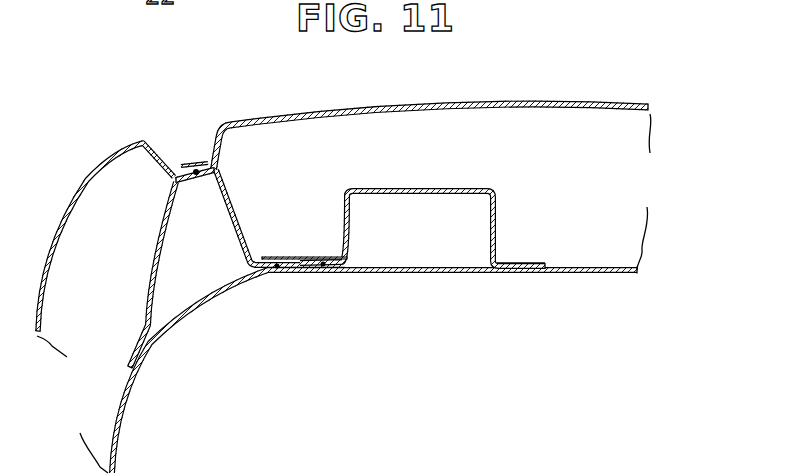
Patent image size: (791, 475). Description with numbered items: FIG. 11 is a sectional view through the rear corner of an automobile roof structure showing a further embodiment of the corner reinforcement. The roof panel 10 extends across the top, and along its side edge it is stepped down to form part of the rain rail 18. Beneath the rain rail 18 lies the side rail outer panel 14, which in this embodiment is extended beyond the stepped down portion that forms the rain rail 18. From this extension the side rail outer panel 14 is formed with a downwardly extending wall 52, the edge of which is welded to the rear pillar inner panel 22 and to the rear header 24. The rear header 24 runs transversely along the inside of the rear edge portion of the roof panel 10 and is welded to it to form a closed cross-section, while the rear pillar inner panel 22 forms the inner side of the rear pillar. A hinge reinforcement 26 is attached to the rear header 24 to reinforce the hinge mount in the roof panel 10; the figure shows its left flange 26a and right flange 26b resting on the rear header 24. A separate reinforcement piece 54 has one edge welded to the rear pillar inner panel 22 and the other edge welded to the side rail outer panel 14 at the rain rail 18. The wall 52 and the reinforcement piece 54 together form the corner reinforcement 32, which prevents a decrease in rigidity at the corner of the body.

The roof panel 10 is at (415, 105).
The side rail outer panel 14 is at (97, 165).
The rain rail 18 is at (193, 158).
The rear pillar inner panel 22 is at (132, 400).
The rear header 24 is at (591, 268).
The hinge reinforcement 26 is at (414, 226).
The left flange of channel member 26a is at (323, 262).
The right flange of channel member 26b is at (522, 267).
The corner reinforcement 32 is at (214, 238).
The downwardly extending wall 52 is at (260, 199).
The reinforcement piece 54 is at (153, 253).